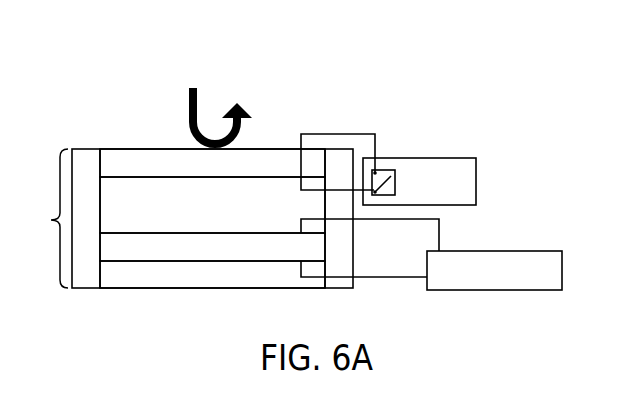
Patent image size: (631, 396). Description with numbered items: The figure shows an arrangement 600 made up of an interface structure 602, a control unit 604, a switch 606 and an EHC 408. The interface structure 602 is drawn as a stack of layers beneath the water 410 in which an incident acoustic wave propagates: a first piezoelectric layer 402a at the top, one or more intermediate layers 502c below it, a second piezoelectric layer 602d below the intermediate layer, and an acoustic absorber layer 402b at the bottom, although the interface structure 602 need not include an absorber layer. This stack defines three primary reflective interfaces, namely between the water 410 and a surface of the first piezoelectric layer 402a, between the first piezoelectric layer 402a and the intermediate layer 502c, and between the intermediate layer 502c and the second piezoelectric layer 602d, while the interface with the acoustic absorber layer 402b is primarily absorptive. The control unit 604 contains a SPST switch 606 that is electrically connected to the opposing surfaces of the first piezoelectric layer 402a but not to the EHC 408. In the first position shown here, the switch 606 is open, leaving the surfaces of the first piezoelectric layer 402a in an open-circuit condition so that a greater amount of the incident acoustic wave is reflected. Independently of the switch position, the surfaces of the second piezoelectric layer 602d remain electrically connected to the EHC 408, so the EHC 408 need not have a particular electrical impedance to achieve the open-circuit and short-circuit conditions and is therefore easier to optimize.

The arrangement 600 is at (321, 38).
The water 410 is at (138, 126).
The first piezoelectric layer 402a is at (147, 170).
The intermediate layer 502c is at (147, 216).
The second piezoelectric layer 602d is at (147, 257).
The acoustic absorber layer 402b is at (147, 285).
The interface structure 602 is at (45, 218).
The switch 606 is at (385, 172).
The control unit 604 is at (476, 182).
The EHC 408 is at (492, 251).